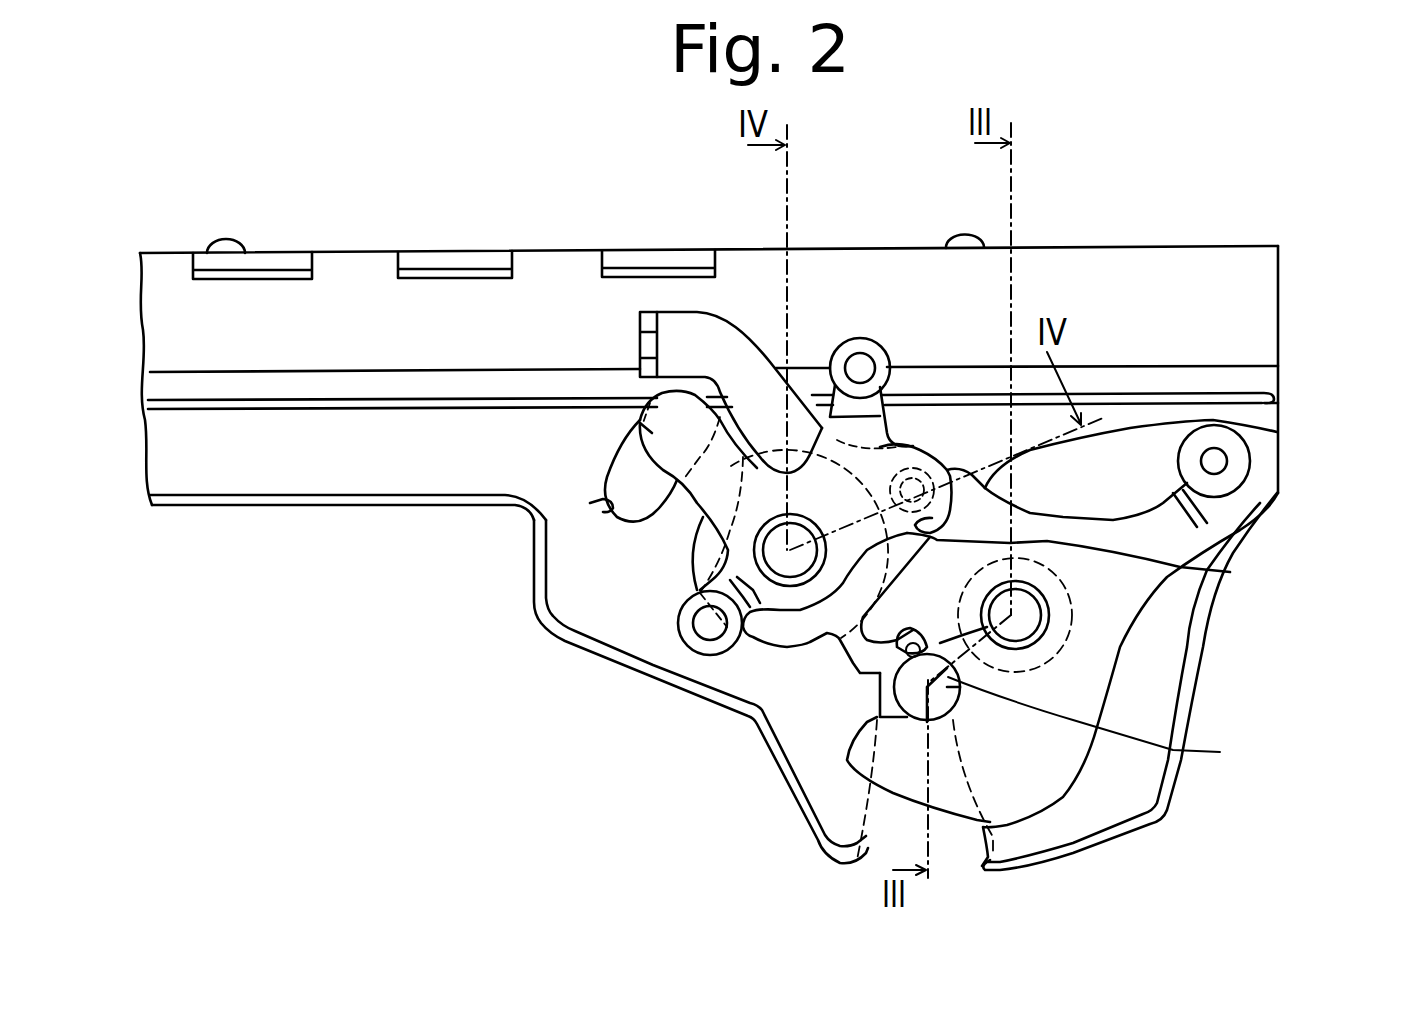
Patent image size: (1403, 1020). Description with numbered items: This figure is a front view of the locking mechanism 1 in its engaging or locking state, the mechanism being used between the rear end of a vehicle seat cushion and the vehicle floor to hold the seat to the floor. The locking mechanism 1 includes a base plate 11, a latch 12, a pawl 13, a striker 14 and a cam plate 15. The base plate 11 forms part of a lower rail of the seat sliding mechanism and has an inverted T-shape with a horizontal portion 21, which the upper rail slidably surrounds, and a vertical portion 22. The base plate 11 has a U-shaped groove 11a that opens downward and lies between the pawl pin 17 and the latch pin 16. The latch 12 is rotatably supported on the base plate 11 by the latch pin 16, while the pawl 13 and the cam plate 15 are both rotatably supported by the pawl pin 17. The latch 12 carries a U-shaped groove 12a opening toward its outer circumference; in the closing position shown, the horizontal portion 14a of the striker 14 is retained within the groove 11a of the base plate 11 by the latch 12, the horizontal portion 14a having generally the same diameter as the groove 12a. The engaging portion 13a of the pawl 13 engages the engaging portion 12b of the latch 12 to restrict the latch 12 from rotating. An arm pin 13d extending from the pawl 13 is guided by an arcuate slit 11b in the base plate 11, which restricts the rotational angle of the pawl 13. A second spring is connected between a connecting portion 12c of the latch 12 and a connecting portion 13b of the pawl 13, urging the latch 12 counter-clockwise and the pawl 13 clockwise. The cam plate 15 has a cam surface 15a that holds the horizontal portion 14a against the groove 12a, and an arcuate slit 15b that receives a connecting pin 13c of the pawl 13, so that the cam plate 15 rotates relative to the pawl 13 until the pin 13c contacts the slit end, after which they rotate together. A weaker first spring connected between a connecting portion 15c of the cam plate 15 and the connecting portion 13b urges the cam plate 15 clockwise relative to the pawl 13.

The locking mechanism 1 is at (1088, 802).
The base plate 11 is at (1137, 246).
The U-shaped groove 11a is at (874, 805).
The slit 11b is at (604, 502).
The latch 12 is at (1143, 636).
The U-shaped groove 12a is at (878, 697).
The engaging portion 12b is at (1277, 428).
The connecting portion 12c is at (1237, 477).
The pawl 13 is at (702, 527).
The engaging portion 13a is at (937, 503).
The connecting portion 13b is at (850, 340).
The connecting pin 13c is at (913, 468).
The arm pin 13d is at (650, 430).
The striker 14 is at (878, 694).
The horizontal portion 14a is at (1116, 725).
The cam plate 15 is at (758, 314).
The cam surface 15a is at (880, 627).
The slit 15b is at (1230, 572).
The connecting portion 15c is at (648, 318).
The latch pin 16 is at (1030, 627).
The pawl pin 17 is at (762, 563).
The horizontal portion 21 is at (350, 282).
The vertical portion 22 is at (295, 468).